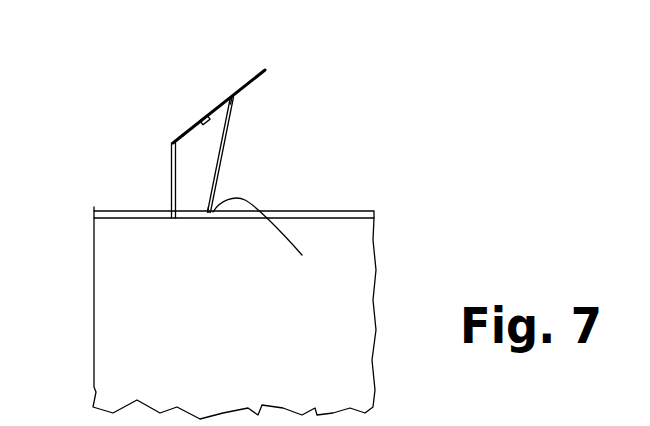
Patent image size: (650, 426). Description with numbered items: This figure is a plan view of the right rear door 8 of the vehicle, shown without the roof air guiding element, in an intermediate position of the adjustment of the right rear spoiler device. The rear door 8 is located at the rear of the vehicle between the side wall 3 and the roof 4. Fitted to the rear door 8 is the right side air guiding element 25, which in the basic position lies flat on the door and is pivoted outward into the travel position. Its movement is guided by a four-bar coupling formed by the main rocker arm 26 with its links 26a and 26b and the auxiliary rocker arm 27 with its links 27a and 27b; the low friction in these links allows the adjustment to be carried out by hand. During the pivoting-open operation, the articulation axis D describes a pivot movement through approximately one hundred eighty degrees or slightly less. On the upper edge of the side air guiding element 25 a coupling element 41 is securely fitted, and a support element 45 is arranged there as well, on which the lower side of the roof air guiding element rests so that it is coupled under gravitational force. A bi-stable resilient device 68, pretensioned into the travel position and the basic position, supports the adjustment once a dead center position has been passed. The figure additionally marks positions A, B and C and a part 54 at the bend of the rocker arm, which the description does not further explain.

The side wall 3 is at (199, 287).
The roof 4 is at (115, 362).
The right rear door 8 is at (303, 211).
The right side air guiding element 25 is at (179, 174).
The main rocker arm 26 is at (282, 203).
The link of the main rocker arm 26a is at (238, 267).
The link of the main rocker arm 26b is at (292, 101).
The auxiliary rocker arm 27 is at (170, 180).
The link of the auxiliary rocker arm 27a is at (153, 268).
The link of the auxiliary rocker arm 27b is at (169, 79).
The coupling element 41 is at (204, 116).
The support element 45 is at (190, 71).
The bend point 54 is at (166, 150).
The resilient device 68 is at (276, 241).
The point A is at (213, 222).
The point B is at (176, 222).
The point C is at (236, 100).
The articulation axis D is at (175, 136).